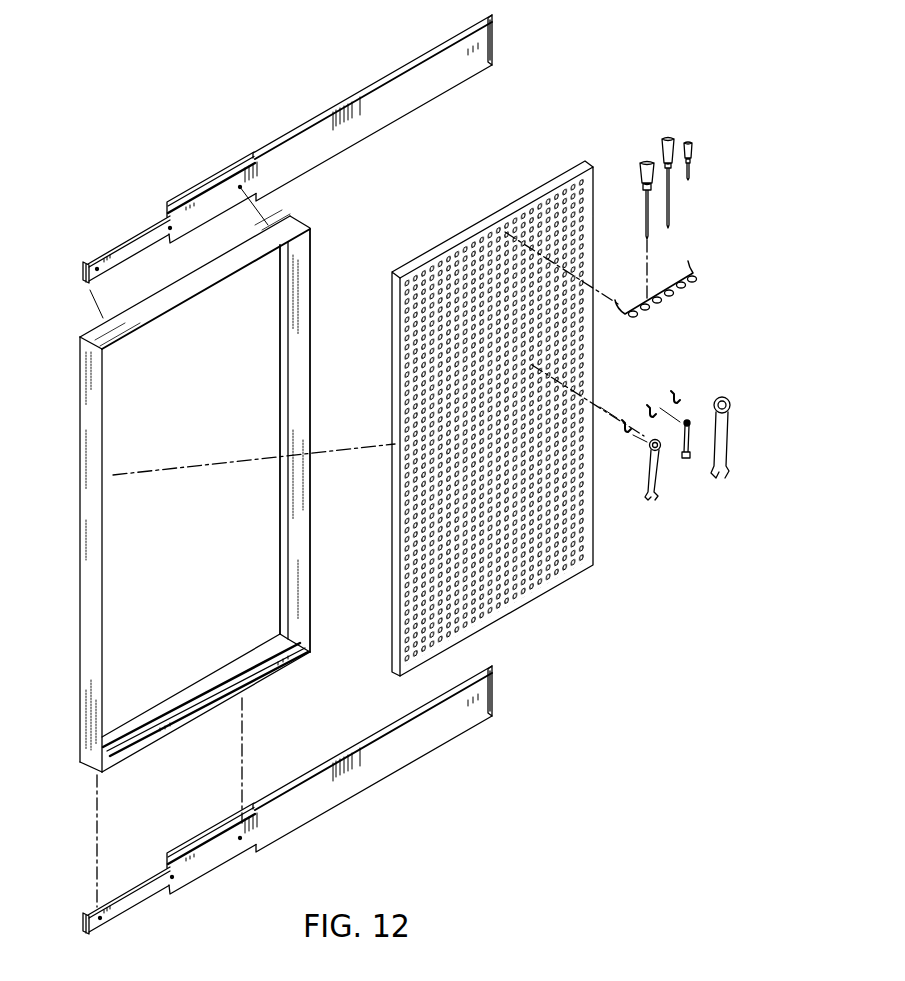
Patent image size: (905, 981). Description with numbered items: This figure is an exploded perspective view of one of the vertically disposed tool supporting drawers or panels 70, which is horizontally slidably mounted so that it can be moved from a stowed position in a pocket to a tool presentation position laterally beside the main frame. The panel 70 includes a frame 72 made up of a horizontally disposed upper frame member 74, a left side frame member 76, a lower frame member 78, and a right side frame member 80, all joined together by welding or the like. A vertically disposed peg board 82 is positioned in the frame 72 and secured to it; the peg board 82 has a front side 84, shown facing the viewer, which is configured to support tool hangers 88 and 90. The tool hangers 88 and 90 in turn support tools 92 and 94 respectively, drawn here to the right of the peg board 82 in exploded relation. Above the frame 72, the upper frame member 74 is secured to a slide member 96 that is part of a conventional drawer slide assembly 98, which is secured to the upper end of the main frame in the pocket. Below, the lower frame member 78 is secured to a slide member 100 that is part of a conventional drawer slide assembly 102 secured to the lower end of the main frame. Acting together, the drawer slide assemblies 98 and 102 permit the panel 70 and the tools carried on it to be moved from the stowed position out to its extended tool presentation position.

The tool supporting panel 70 is at (403, 230).
The frame 72 is at (67, 505).
The upper frame member 74 is at (163, 303).
The left side frame member 76 is at (95, 603).
The lower frame member 78 is at (213, 678).
The right side frame member 80 is at (283, 507).
The peg board 82 is at (503, 207).
The front side 84 is at (507, 538).
The tool hanger 88 is at (643, 317).
The tool hanger 90 is at (697, 387).
The tools 92 is at (690, 185).
The tools 94 is at (733, 430).
The slide member 96 is at (132, 228).
The drawer slide assembly 98 is at (273, 128).
The slide member 100 is at (142, 882).
The drawer slide assembly 102 is at (303, 767).